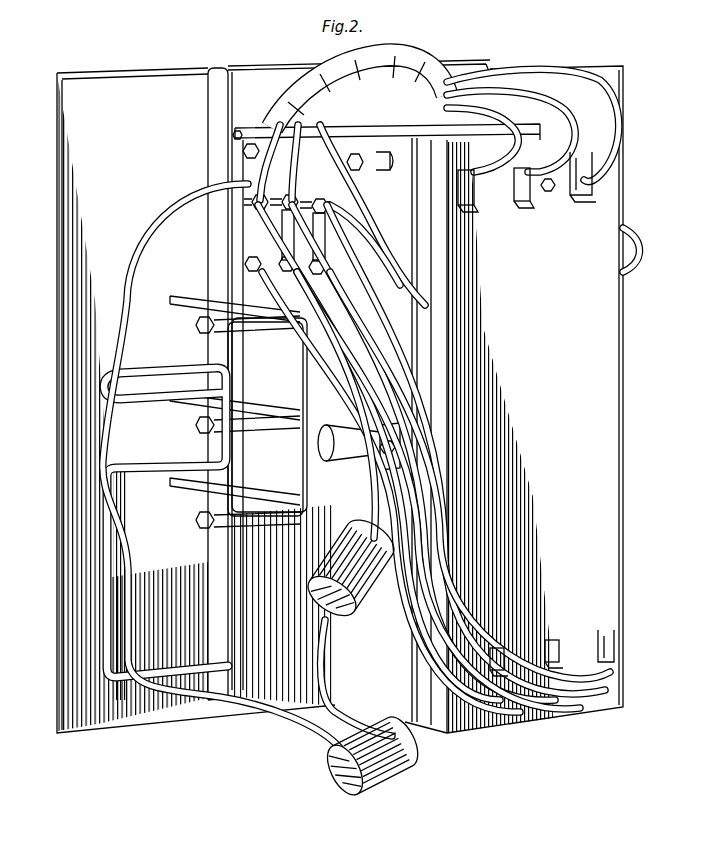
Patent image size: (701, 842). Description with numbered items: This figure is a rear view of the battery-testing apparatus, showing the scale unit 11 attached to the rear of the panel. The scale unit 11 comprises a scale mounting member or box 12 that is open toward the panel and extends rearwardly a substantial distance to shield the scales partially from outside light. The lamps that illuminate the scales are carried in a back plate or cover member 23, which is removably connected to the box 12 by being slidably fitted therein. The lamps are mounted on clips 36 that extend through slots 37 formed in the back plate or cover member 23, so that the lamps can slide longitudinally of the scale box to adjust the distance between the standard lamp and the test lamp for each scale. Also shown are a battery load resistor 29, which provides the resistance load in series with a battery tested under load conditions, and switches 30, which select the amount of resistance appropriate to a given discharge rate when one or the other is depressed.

The scale unit 11 is at (372, 710).
The scale mounting member or box 12 is at (303, 708).
The back plate or cover member 23 is at (622, 418).
The resistor 29 is at (108, 637).
The switches 30 is at (196, 306).
The clips 36 is at (585, 198).
The slots 37 is at (518, 166).